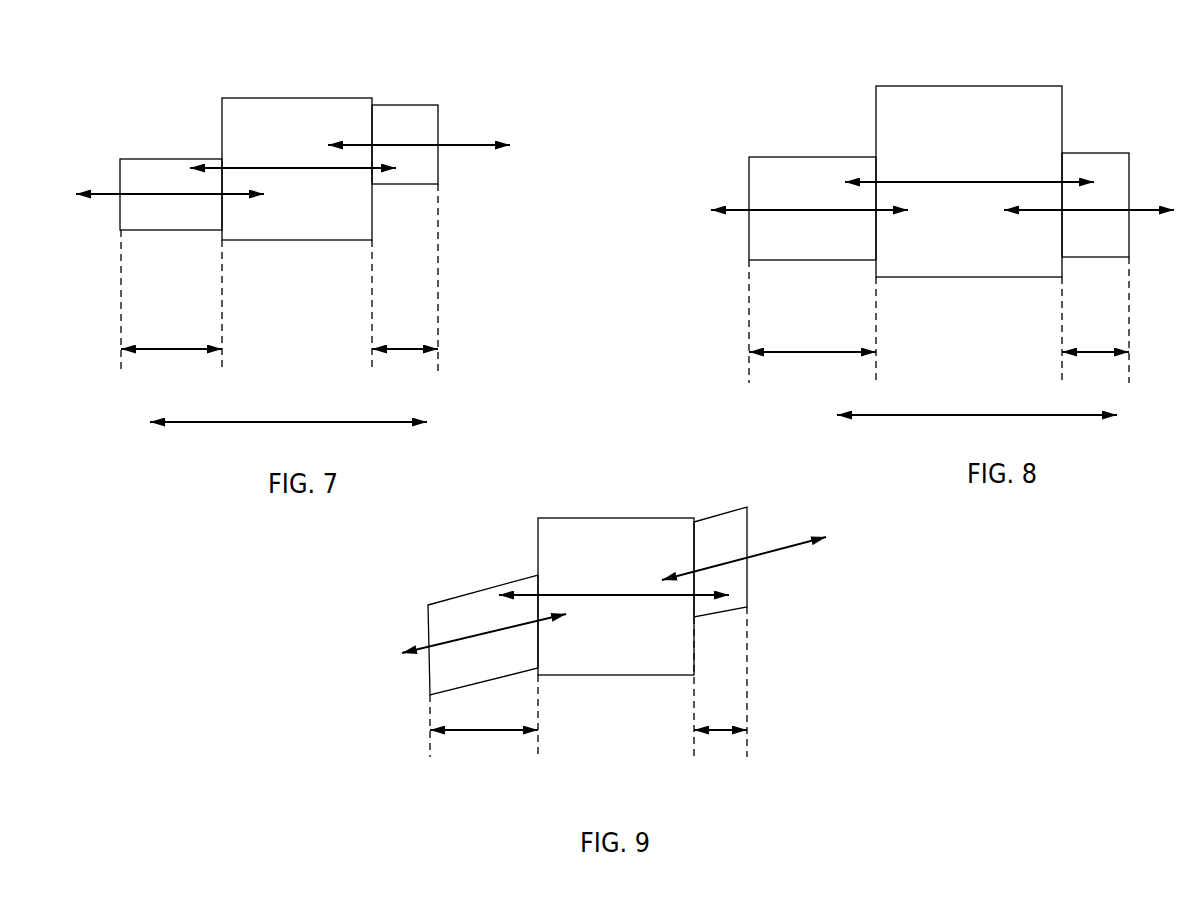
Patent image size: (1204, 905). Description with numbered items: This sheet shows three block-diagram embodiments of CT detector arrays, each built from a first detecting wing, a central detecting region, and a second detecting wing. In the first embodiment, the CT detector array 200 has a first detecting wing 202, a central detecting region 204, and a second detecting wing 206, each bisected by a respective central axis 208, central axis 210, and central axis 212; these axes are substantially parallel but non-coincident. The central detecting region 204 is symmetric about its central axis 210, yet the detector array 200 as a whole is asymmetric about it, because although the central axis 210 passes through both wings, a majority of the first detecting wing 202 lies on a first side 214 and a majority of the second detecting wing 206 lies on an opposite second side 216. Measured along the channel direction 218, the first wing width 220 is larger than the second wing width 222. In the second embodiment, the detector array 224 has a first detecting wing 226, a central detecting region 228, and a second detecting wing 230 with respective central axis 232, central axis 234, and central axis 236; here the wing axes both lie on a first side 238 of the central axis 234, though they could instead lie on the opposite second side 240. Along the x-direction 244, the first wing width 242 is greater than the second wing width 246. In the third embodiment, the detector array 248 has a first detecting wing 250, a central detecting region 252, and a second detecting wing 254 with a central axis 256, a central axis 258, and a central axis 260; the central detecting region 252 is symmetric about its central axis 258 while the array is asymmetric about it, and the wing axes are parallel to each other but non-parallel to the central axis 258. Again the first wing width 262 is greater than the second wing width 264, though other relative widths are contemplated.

In FIG. 7, the CT detector array 200 is at (128, 72).
In FIG. 7, the first detecting wing 202 is at (163, 159).
In FIG. 7, the central detecting region 204 is at (300, 98).
In FIG. 7, the second detecting wing 206 is at (410, 105).
In FIG. 7, the central axis 208 is at (160, 194).
In FIG. 7, the central axis 210 is at (280, 168).
In FIG. 7, the central axis 212 is at (468, 145).
In FIG. 7, the first side 214 is at (314, 174).
In FIG. 7, the second side 216 is at (296, 157).
In FIG. 7, the channel direction 218 is at (290, 422).
In FIG. 7, the first wing width 220 is at (167, 349).
In FIG. 7, the second wing width 222 is at (411, 349).
In FIG. 8, the detector array 224 is at (793, 92).
In FIG. 8, the first detecting wing 226 is at (749, 165).
In FIG. 8, the central detecting region 228 is at (876, 106).
In FIG. 8, the second detecting wing 230 is at (1129, 165).
In FIG. 8, the central axis 232 is at (825, 210).
In FIG. 8, the central axis 234 is at (1033, 182).
In FIG. 8, the central axis 236 is at (1092, 210).
In FIG. 8, the first side 238 is at (933, 196).
In FIG. 8, the second side 240 is at (960, 160).
In FIG. 8, the first wing width 242 is at (799, 352).
In FIG. 8, the x-direction 244 is at (974, 415).
In FIG. 8, the second wing width 246 is at (1094, 352).
In FIG. 9, the detector array 248 is at (816, 727).
In FIG. 9, the first detecting wing 250 is at (452, 596).
In FIG. 9, the central detecting region 252 is at (538, 528).
In FIG. 9, the second detecting wing 254 is at (719, 518).
In FIG. 9, the central axis 256 is at (472, 638).
In FIG. 9, the central axis 258 is at (603, 595).
In FIG. 9, the central axis 260 is at (770, 557).
In FIG. 9, the first wing width 262 is at (480, 730).
In FIG. 9, the second wing width 264 is at (720, 730).